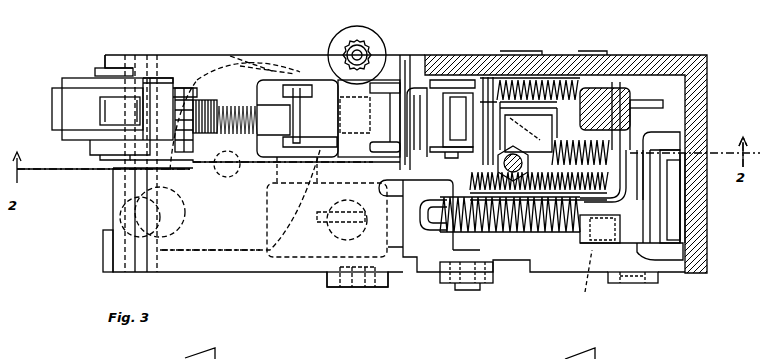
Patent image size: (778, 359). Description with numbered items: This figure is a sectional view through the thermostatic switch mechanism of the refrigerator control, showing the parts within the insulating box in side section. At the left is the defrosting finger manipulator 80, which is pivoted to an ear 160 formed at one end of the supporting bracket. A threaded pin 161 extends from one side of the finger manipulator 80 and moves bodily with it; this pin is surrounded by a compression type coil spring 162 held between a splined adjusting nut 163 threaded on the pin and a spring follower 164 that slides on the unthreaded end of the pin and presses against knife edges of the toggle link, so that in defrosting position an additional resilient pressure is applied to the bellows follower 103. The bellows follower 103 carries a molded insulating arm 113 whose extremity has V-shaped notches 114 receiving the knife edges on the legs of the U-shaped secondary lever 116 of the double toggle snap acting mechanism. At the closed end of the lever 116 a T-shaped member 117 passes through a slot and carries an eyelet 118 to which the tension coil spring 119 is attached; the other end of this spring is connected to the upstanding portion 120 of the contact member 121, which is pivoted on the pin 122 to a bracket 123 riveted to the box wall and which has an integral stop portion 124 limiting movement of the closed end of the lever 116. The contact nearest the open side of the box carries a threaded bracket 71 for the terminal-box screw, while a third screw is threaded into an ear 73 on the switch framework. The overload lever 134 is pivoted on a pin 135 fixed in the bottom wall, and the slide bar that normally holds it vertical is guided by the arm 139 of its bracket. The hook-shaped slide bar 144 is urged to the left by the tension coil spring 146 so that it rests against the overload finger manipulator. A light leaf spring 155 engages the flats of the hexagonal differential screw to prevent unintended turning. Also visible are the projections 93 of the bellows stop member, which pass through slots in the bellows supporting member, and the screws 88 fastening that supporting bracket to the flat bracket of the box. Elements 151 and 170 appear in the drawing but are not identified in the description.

The threaded bracket 71 is at (657, 283).
The ear 73 is at (340, 278).
The defrosting finger manipulator 80 is at (118, 108).
The screws 88 is at (128, 214).
The projections 93 is at (105, 57).
The bellows follower 103 is at (275, 72).
The insulating arm 113 is at (413, 247).
The V-shaped notches 114 is at (470, 283).
The U-shaped secondary lever 116 is at (558, 240).
The T-shaped member 117 is at (640, 200).
The eyelet 118 is at (594, 279).
The tension coil spring 119 is at (548, 233).
The upstanding portion 120 is at (433, 257).
The contact member 121 is at (667, 252).
The pin 122 is at (667, 220).
The bracket 123 is at (683, 137).
The stop portion 124 is at (627, 243).
The overload lever 134 is at (427, 85).
The pin 135 is at (440, 133).
The arm 139 is at (480, 130).
The hook-shaped slide bar 144 is at (667, 107).
The tension coil spring 146 is at (558, 77).
The plate 151 is at (408, 165).
The light leaf spring 155 is at (500, 125).
The ear 160 is at (95, 72).
The threaded pin 161 is at (178, 100).
The compression type coil spring 162 is at (200, 100).
The splined adjusting nut 163 is at (185, 92).
The spring follower 164 is at (297, 97).
The support 170 is at (463, 283).